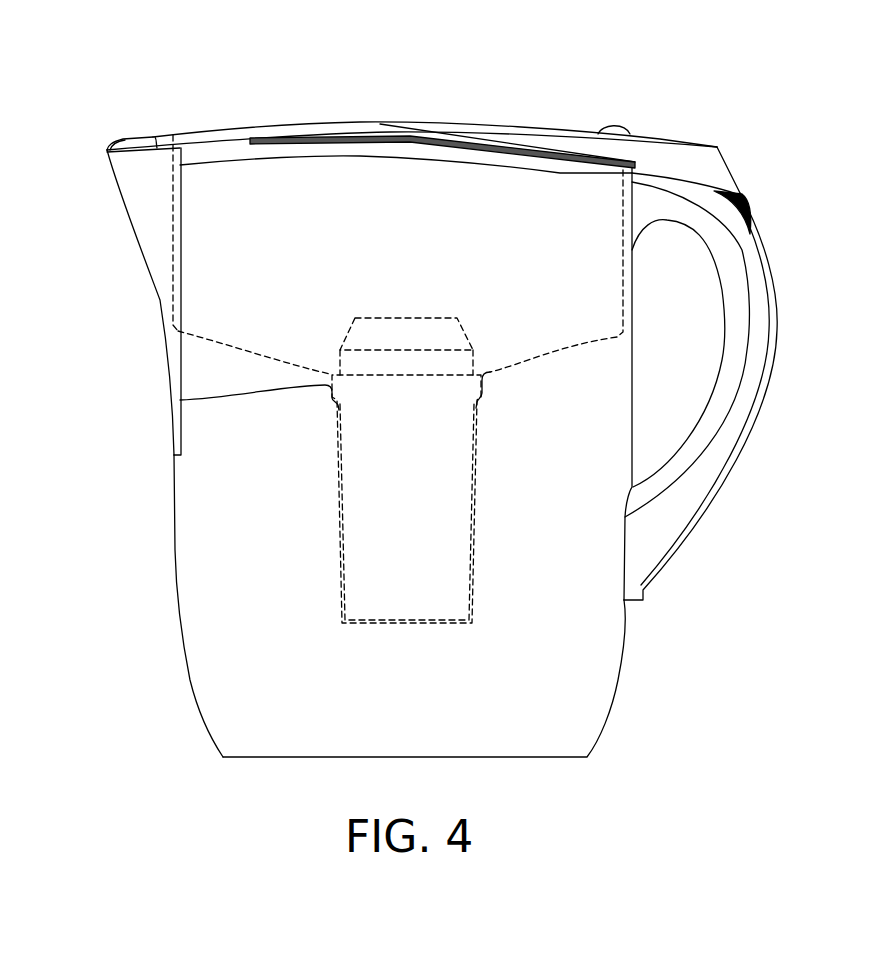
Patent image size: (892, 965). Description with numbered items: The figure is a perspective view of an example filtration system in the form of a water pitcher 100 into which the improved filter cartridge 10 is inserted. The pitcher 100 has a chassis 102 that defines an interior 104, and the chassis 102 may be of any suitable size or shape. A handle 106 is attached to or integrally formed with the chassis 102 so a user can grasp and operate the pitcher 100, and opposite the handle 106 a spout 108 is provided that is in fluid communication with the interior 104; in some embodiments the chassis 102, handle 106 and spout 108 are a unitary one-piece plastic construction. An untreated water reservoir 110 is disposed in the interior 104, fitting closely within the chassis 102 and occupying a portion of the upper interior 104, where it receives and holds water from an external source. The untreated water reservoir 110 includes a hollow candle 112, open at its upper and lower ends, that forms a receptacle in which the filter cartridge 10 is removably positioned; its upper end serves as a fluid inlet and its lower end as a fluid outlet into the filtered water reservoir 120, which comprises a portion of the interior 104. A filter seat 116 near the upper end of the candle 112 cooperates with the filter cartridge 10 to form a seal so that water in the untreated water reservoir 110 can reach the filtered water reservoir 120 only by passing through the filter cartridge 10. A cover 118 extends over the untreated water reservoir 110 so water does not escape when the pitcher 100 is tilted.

The filter cartridge 10 is at (456, 470).
The pitcher 100 is at (383, 446).
The chassis 102 is at (175, 507).
The interior 104 is at (227, 673).
The handle 106 is at (737, 427).
The spout 108 is at (138, 177).
The untreated water reservoir 110 is at (495, 235).
The candle 112 is at (480, 578).
The filter seat 116 is at (180, 398).
The cover 118 is at (300, 132).
The filtered water reservoir 120 is at (550, 697).